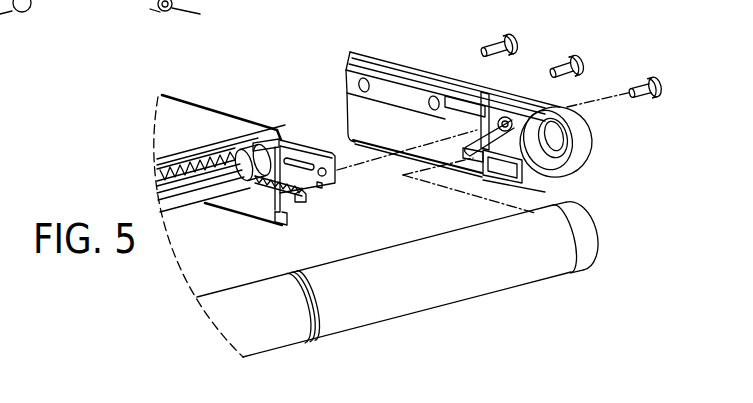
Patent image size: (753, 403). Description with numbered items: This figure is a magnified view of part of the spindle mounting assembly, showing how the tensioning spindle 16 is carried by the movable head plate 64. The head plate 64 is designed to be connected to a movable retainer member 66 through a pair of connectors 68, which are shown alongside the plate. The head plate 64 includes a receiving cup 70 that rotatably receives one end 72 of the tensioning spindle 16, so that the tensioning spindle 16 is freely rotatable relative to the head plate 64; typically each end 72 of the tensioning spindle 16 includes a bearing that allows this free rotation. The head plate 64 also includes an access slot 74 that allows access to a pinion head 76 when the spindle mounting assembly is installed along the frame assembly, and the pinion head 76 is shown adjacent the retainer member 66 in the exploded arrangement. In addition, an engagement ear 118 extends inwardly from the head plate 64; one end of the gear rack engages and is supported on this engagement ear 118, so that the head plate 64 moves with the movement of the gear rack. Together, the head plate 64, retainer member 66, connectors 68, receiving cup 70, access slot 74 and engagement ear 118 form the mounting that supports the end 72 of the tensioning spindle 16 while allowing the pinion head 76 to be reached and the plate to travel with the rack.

The tensioning spindle 16 is at (453, 287).
The movable head plate 64 is at (418, 64).
The movable retainer member 66 is at (297, 140).
The connectors 68 is at (512, 44).
The receiving cup 70 is at (573, 169).
The end of the tensioning spindle 72 is at (597, 233).
The access slot 74 is at (466, 78).
The pinion head 76 is at (242, 150).
The engagement ear 118 is at (477, 176).